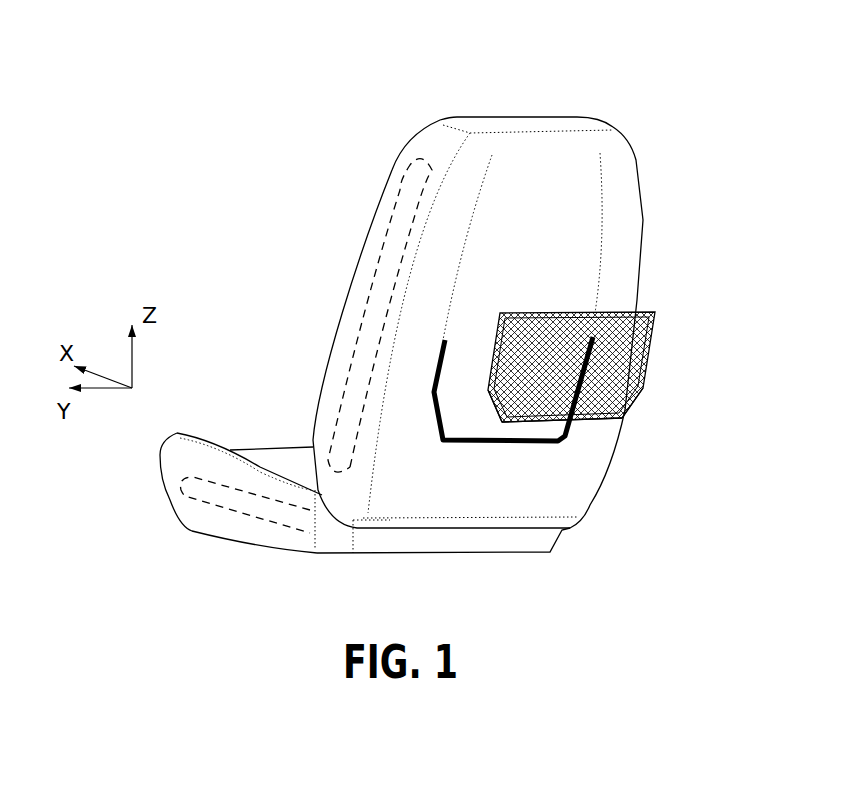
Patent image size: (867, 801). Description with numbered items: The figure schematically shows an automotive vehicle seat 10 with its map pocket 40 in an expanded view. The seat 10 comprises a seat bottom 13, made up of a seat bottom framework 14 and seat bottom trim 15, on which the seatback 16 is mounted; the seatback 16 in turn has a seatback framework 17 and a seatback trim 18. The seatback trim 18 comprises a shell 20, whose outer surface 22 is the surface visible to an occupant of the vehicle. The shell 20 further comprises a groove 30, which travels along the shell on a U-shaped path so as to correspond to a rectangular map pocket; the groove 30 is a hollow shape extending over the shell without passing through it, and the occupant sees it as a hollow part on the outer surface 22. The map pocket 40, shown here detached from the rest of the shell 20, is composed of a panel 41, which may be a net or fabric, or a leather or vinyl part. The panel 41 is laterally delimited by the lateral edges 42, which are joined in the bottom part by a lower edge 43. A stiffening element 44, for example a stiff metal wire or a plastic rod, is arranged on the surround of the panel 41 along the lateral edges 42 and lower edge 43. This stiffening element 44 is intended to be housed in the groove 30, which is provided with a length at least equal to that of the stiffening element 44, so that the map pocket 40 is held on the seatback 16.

The vehicle seat 10 is at (232, 267).
The seat bottom 13 is at (283, 460).
The seat bottom framework 14 is at (225, 510).
The seat bottom trim 15 is at (267, 460).
The seatback 16 is at (410, 93).
The seatback framework 17 is at (390, 170).
The seatback trim 18 is at (382, 213).
The shell 20 is at (512, 148).
The outer surface 22 is at (583, 150).
The groove 30 is at (437, 437).
The map pocket 40 is at (663, 315).
The panel 41 is at (612, 360).
The lateral edges 42 is at (498, 328).
The lower edge 43 is at (590, 420).
The stiffening element 44 is at (490, 370).